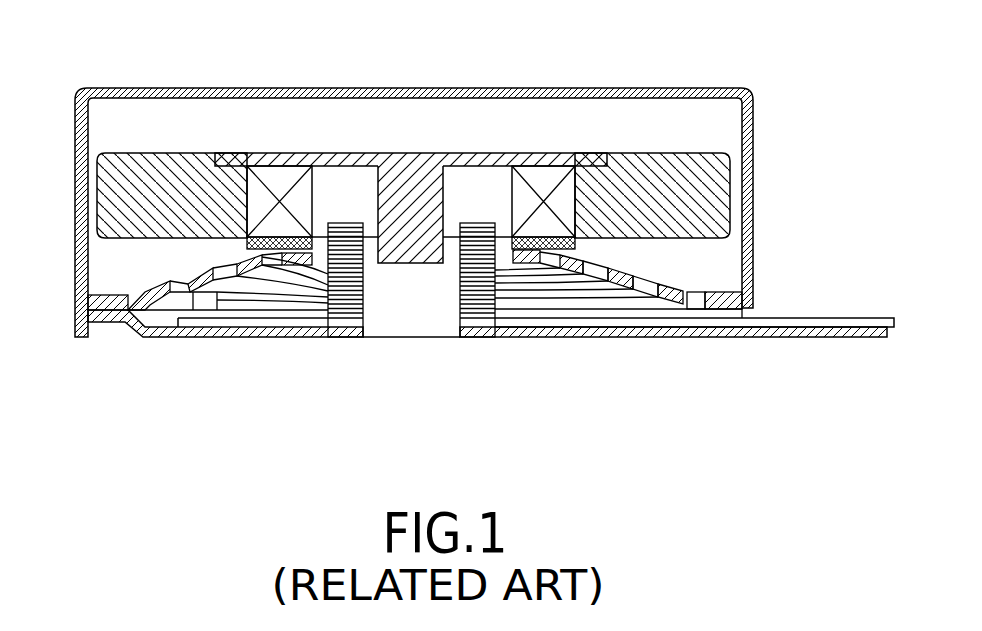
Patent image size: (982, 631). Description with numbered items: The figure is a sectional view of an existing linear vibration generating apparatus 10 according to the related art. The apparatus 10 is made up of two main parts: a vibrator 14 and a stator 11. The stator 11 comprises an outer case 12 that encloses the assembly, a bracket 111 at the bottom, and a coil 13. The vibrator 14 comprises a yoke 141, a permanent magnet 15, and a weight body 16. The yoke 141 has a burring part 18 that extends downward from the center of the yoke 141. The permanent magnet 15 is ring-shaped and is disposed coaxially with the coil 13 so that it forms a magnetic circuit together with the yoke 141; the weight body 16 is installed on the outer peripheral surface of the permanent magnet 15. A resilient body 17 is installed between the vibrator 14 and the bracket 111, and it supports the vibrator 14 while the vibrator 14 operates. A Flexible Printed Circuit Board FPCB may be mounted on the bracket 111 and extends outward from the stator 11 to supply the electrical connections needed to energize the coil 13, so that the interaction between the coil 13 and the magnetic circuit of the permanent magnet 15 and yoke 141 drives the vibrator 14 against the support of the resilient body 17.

The linear vibration generating apparatus 10 is at (173, 31).
The stator 11 is at (390, 347).
The bracket 111 is at (800, 338).
The outer case 12 is at (667, 90).
The coil 13 is at (482, 308).
The vibrator 14 is at (412, 148).
The yoke 141 is at (432, 187).
The permanent magnet 15 is at (557, 185).
The weight body 16 is at (717, 175).
The resilient body 17 is at (683, 292).
The burring part 18 is at (577, 244).
The Flexible Printed Circuit Board FPCB is at (857, 318).